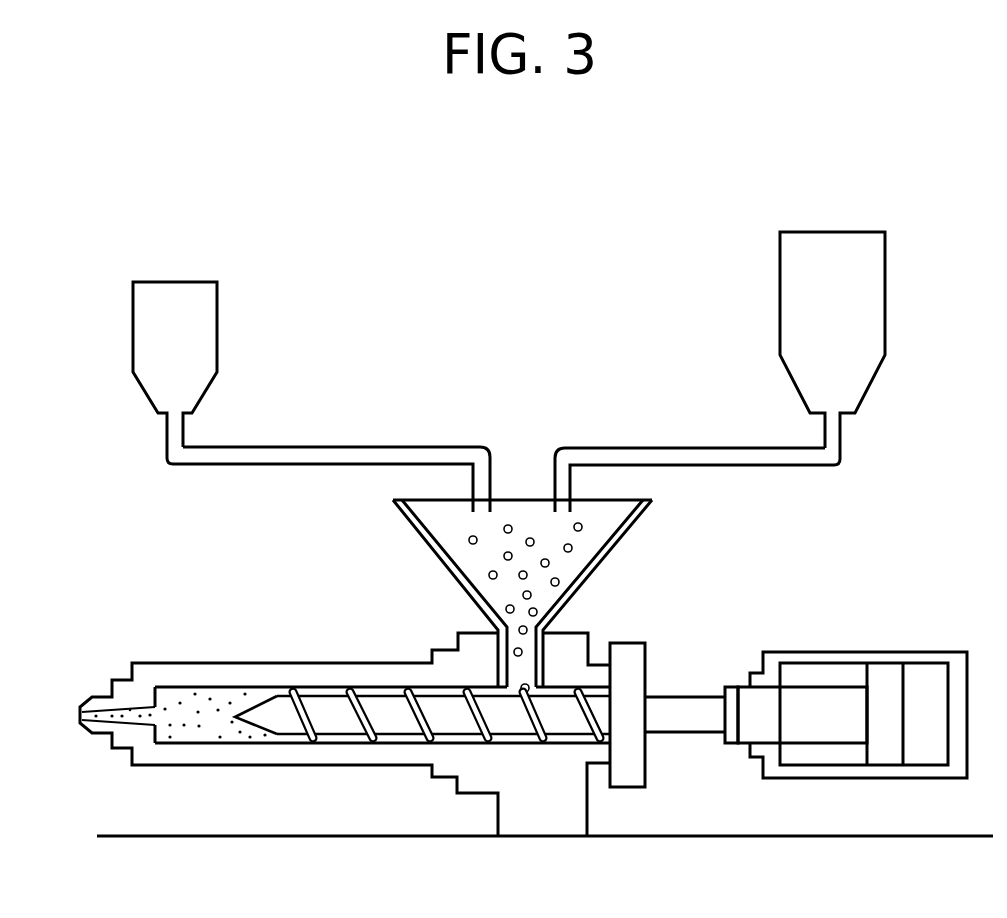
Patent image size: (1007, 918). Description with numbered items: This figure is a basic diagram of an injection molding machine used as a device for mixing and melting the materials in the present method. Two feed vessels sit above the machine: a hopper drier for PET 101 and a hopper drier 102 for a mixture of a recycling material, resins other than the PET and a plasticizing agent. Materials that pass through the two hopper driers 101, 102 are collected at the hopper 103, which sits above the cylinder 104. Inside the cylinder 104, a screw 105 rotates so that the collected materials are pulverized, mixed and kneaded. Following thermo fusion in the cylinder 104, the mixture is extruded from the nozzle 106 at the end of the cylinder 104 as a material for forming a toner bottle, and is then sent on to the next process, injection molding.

The hopper drier for PET 101 is at (886, 293).
The hopper drier for a mixture of a recycling material, resins other than the PET an 102 is at (218, 328).
The hopper 103 is at (599, 563).
The cylinder 104 is at (825, 683).
The screw 105 is at (385, 707).
The nozzle 106 is at (93, 698).